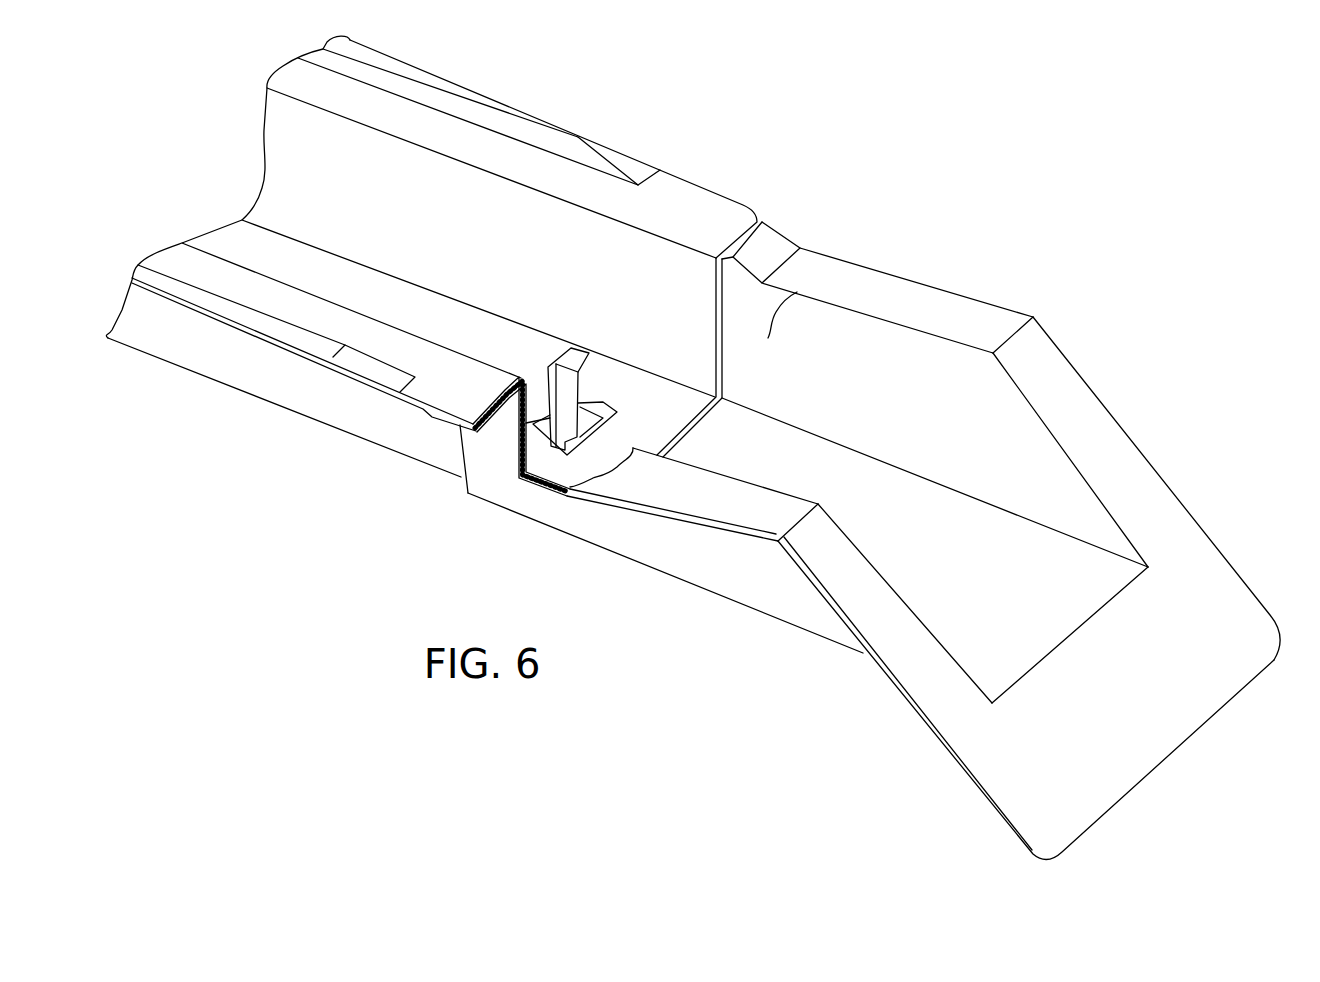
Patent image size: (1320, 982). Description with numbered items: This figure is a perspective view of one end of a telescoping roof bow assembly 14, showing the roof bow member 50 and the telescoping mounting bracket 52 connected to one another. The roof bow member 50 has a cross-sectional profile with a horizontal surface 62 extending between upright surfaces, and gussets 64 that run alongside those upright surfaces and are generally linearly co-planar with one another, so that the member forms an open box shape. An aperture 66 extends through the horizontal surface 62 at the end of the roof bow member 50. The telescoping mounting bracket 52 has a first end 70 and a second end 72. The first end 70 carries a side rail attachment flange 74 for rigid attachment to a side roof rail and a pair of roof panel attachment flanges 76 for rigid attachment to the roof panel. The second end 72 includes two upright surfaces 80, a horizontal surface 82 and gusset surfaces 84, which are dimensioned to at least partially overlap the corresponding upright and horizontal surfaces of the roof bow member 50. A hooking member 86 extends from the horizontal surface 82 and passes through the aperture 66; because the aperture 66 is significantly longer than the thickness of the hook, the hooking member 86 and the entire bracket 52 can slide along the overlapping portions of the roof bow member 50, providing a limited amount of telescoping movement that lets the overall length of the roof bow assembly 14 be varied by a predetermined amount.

The roof bow assembly 14 is at (878, 148).
The roof bow member 50 is at (675, 168).
The telescoping mounting bracket 52 is at (913, 274).
The horizontal surface 62 is at (680, 442).
The gussets 64 is at (718, 221).
The aperture 66 is at (588, 402).
The first end 70 is at (1130, 800).
The second end 72 is at (492, 483).
The side rail attachment flange 74 is at (1215, 607).
The roof panel attachment flanges 76 is at (984, 330).
The upright surfaces 80 is at (797, 292).
The horizontal surface 82 is at (713, 425).
The gusset surfaces 84 is at (763, 227).
The hooking member 86 is at (562, 370).